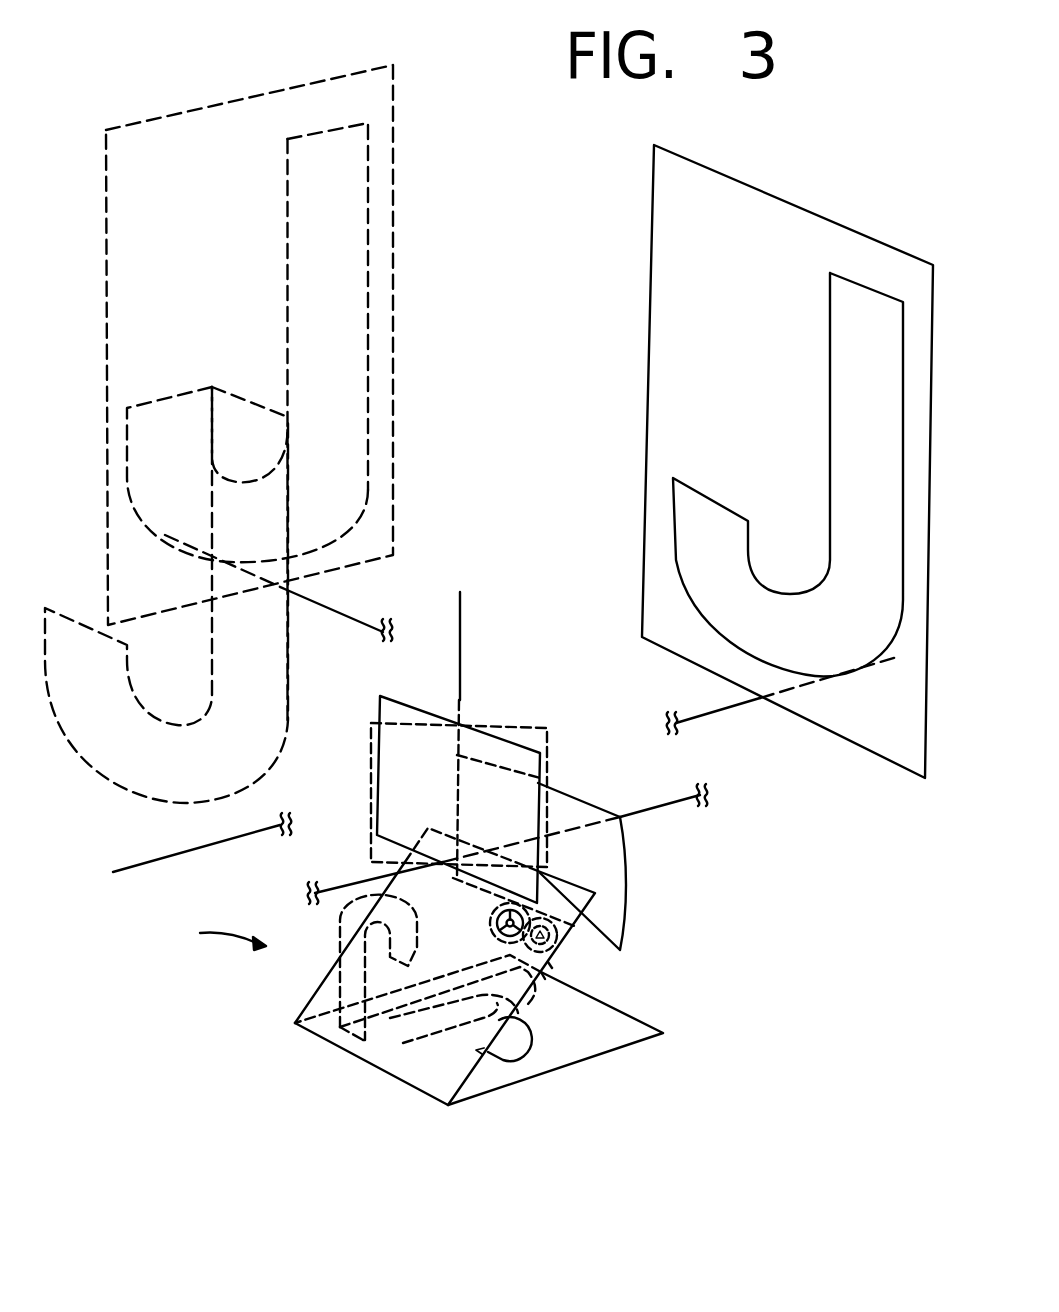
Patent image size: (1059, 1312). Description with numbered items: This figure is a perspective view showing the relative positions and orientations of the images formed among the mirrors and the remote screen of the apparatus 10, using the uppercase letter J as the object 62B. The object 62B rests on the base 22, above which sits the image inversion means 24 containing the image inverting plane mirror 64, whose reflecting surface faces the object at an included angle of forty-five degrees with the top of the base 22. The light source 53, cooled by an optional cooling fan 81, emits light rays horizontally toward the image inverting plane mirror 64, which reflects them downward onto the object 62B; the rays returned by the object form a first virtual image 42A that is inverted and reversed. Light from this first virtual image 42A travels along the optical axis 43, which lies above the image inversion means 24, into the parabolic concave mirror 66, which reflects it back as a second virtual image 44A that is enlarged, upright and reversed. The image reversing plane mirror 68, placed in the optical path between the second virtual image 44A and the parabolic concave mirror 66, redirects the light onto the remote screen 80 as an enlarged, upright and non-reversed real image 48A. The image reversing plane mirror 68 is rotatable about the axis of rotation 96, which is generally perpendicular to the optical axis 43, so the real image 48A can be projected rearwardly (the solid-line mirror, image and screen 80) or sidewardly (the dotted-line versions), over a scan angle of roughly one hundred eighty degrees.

The apparatus 10 is at (218, 936).
The base 22 is at (615, 1015).
The image inversion means 24 is at (312, 982).
The first virtual image 42A is at (418, 950).
The optical axis 43 is at (676, 800).
The second virtual image 44A is at (288, 665).
The real image 48A is at (289, 252).
The light source 53 is at (552, 968).
The object 62B is at (530, 1042).
The image inverting plane mirror 64 is at (545, 979).
The parabolic concave mirror 66 is at (627, 870).
The image reversing plane mirror 68 is at (397, 698).
The remote screen 80 is at (393, 512).
The cooling fan 81 is at (489, 922).
The axis of rotation 96 is at (462, 634).